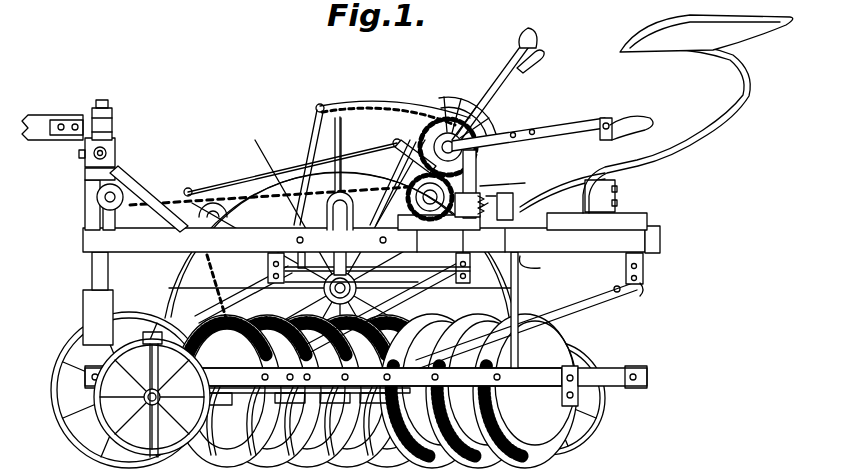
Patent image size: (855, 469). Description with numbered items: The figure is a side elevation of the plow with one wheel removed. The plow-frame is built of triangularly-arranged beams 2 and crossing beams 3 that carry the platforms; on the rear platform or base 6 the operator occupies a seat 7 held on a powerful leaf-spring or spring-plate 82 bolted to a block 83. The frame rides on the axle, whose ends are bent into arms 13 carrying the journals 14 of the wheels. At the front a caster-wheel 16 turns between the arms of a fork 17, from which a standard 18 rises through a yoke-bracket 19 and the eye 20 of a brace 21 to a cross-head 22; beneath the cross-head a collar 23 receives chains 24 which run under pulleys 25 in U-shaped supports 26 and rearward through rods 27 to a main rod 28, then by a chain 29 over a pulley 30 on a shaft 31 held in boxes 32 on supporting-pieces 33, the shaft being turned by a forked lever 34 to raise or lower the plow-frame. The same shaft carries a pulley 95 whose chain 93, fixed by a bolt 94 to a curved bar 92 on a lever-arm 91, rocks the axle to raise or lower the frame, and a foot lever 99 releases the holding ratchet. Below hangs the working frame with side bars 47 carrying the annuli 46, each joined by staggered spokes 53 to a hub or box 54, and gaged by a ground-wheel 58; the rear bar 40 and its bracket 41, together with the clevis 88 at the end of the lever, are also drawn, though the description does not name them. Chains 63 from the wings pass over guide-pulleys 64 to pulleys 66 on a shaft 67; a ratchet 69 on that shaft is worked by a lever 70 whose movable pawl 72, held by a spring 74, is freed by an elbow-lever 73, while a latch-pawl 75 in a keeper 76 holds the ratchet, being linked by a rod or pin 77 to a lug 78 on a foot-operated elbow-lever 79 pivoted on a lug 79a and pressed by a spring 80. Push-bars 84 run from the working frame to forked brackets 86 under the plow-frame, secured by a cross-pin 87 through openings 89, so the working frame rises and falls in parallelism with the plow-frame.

The beam 2 is at (371, 239).
The beam 3 is at (439, 223).
The platform or base 6 is at (597, 221).
The seat 7 is at (704, 50).
The arms 13 is at (349, 254).
The journals 14 is at (360, 278).
The caster-wheel 16 is at (85, 377).
The fork 17 is at (98, 317).
The standard 18 is at (108, 268).
The yoke-bracket 19 is at (85, 205).
The eye 20 is at (85, 174).
The brace 21 is at (148, 196).
The cross-head 22 is at (105, 126).
The collar 23 is at (116, 152).
The chains 24 is at (188, 188).
The pulleys 25 is at (122, 206).
The U-shaped supports 26 is at (98, 218).
The rods 27 is at (294, 167).
The main rod 28 is at (262, 173).
The chain 29 is at (392, 160).
The pulley 30 is at (458, 118).
The shaft 31 is at (446, 118).
The boxes 32 is at (478, 108).
The supporting-pieces 33 is at (477, 170).
The lever 34 is at (548, 131).
The rear bar 40 is at (598, 370).
The rear wheel bracket 41 is at (580, 392).
The annuli 46 is at (375, 380).
The side bars 47 is at (371, 386).
The staggered spokes 53 is at (256, 437).
The hub or box 54 is at (367, 391).
The ground-wheel 58 is at (80, 412).
The chains 63 is at (198, 268).
The guide-pulleys 64 is at (228, 215).
The pulleys 66 is at (412, 237).
The shaft 67 is at (430, 197).
The ratchet 69 is at (384, 196).
The lever 70 is at (495, 79).
The movable pawl 72 is at (494, 187).
The elbow-lever 73 is at (536, 61).
The spring 74 is at (400, 168).
The latch-pawl 75 is at (448, 237).
The keeper 76 is at (474, 236).
The rod or pin 77 is at (503, 188).
The lug 78 is at (527, 239).
The elbow-lever 79 is at (519, 206).
The lug 79a is at (539, 265).
The spring 80 is at (490, 196).
The leaf-spring or spring-plate 82 is at (683, 143).
The block 83 is at (617, 186).
The push-bars 84 is at (416, 314).
The brackets 86 is at (648, 270).
The cross-pin 87 is at (645, 293).
The clevis 88 is at (635, 128).
The openings 89 is at (614, 289).
The lever-arm 91 is at (309, 150).
The curved bar 92 is at (350, 171).
The chain 93 is at (385, 112).
The bolt 94 is at (320, 104).
The pulley 95 is at (450, 104).
The lever 99 is at (562, 191).